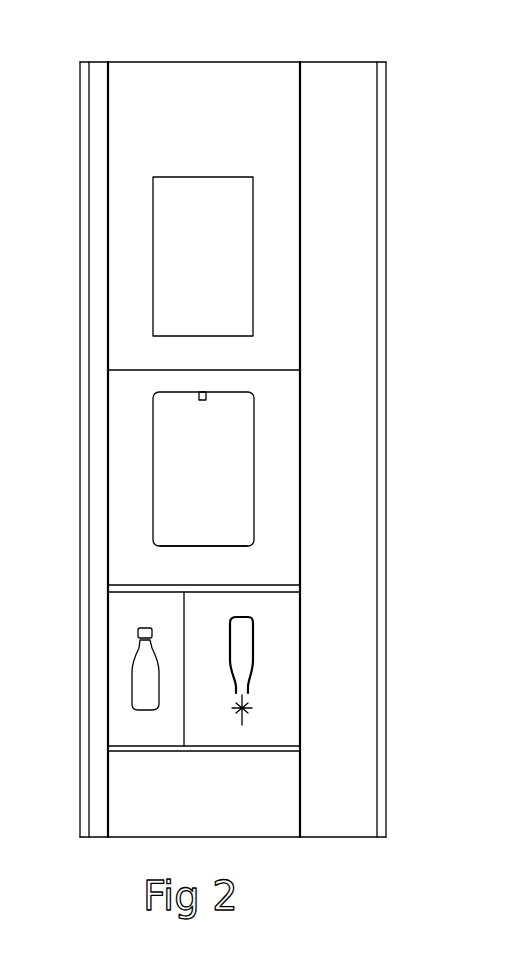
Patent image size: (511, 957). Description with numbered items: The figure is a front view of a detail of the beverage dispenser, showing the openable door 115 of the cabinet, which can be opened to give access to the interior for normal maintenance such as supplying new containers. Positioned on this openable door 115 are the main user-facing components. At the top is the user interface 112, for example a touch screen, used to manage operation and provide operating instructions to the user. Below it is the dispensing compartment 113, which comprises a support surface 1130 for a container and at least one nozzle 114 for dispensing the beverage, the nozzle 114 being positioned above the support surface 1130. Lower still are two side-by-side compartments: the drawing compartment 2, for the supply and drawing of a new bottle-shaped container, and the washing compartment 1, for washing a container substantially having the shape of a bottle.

The openable door 115 is at (283, 62).
The user interface 112 is at (232, 268).
The dispensing compartment 113 is at (226, 490).
The nozzle 114 is at (203, 404).
The support surface 1130 is at (213, 545).
The drawing compartment 2 is at (134, 724).
The washing compartment 1 is at (282, 701).